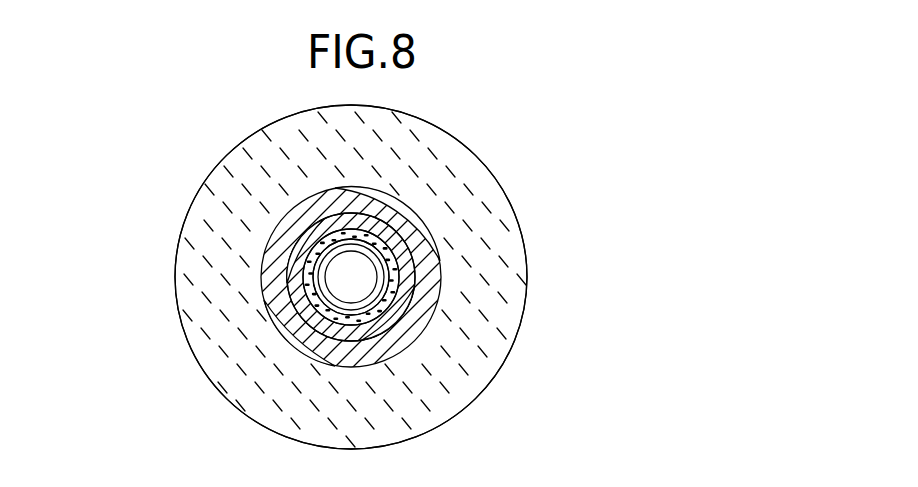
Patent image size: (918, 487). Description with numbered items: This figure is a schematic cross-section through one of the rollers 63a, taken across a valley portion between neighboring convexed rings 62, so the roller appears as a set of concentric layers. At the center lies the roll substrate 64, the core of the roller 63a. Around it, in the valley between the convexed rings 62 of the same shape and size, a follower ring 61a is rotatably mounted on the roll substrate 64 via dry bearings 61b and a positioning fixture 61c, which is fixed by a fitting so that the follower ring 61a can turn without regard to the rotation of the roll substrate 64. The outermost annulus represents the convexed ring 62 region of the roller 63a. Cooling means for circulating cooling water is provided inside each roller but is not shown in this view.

The roller 63a is at (515, 120).
The convexed ring 62 is at (507, 277).
The follower ring 61a is at (430, 317).
The dry bearing 61b is at (323, 328).
The positioning fixture 61c is at (325, 301).
The roll substrate 64 is at (312, 258).